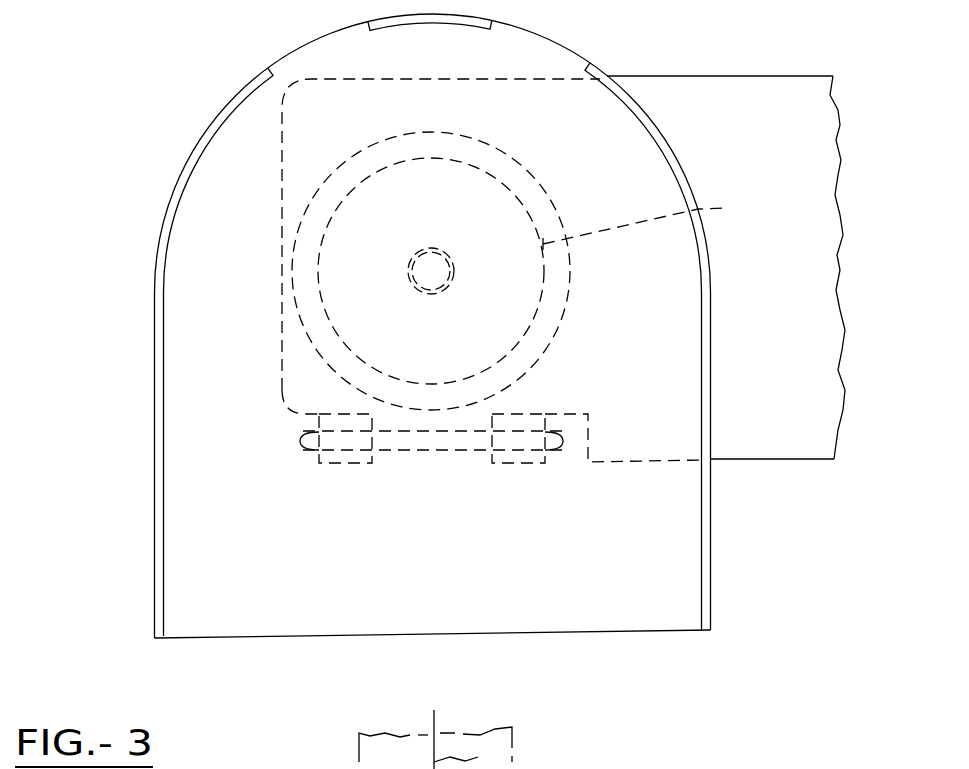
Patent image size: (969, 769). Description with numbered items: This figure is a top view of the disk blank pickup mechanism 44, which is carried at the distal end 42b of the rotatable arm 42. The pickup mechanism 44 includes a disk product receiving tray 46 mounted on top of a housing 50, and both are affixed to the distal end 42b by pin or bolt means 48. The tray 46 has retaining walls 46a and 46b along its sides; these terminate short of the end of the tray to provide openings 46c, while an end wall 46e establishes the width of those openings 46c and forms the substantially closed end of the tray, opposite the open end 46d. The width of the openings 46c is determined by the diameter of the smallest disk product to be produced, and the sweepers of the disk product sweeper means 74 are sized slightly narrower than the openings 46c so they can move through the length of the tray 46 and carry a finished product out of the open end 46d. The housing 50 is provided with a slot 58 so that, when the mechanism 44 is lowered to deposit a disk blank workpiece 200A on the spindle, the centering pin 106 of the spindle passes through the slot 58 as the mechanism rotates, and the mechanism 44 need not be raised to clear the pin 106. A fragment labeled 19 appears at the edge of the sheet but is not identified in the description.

The disk blank pickup mechanism 44 is at (186, 116).
The disk product receiving tray 46 is at (161, 222).
The retaining wall 46a is at (157, 270).
The retaining wall 46b is at (708, 591).
The openings 46c is at (303, 45).
The open end 46d is at (618, 608).
The end wall 46e is at (437, 30).
The arm 42 is at (793, 460).
The distal end 42b is at (282, 326).
The pin or bolt means 48 is at (300, 452).
The housing 50 is at (571, 271).
The slot 58 is at (490, 167).
The centering pin 106 is at (441, 263).
The disk blank workpiece 200A is at (667, 225).
The frame portion 19 is at (435, 739).
The disk product sweeper means 74 is at (578, 768).